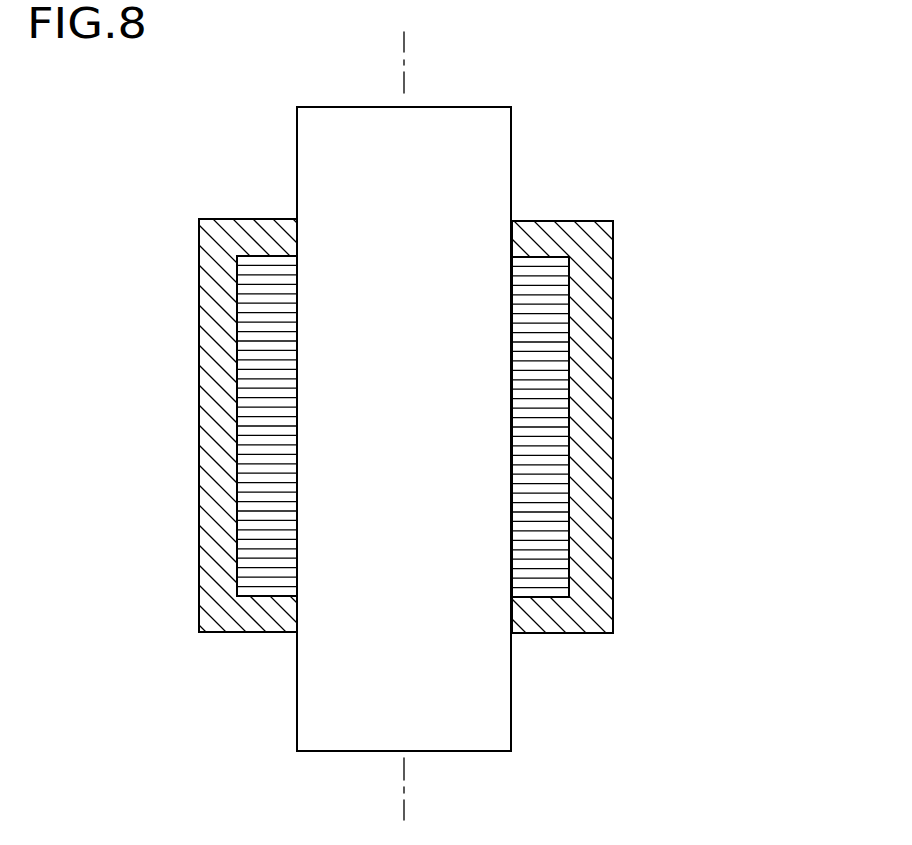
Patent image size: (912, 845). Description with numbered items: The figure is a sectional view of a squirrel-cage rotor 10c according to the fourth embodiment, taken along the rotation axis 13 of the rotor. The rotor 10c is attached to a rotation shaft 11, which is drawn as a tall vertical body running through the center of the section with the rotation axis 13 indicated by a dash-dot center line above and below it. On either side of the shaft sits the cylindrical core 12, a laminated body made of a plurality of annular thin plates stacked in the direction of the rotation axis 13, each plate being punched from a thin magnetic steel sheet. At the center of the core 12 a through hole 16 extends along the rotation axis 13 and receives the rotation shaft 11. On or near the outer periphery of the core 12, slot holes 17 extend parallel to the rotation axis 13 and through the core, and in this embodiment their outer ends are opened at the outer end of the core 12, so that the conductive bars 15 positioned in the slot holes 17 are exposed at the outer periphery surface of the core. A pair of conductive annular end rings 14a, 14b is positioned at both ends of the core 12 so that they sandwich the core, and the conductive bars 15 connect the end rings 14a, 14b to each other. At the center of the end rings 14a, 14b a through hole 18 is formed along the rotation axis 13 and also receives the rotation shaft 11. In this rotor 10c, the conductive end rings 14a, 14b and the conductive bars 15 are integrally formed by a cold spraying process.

The squirrel-cage rotor 10c is at (613, 158).
The rotation shaft 11 is at (297, 108).
The core 12 is at (395, 424).
The rotation axis 13 is at (405, 49).
The conductive end ring 14a is at (613, 232).
The conductive end ring 14b is at (612, 630).
The conductive bars 15 is at (203, 376).
The through hole 16 is at (297, 585).
The slot holes 17 is at (237, 273).
The through hole 18 is at (297, 232).